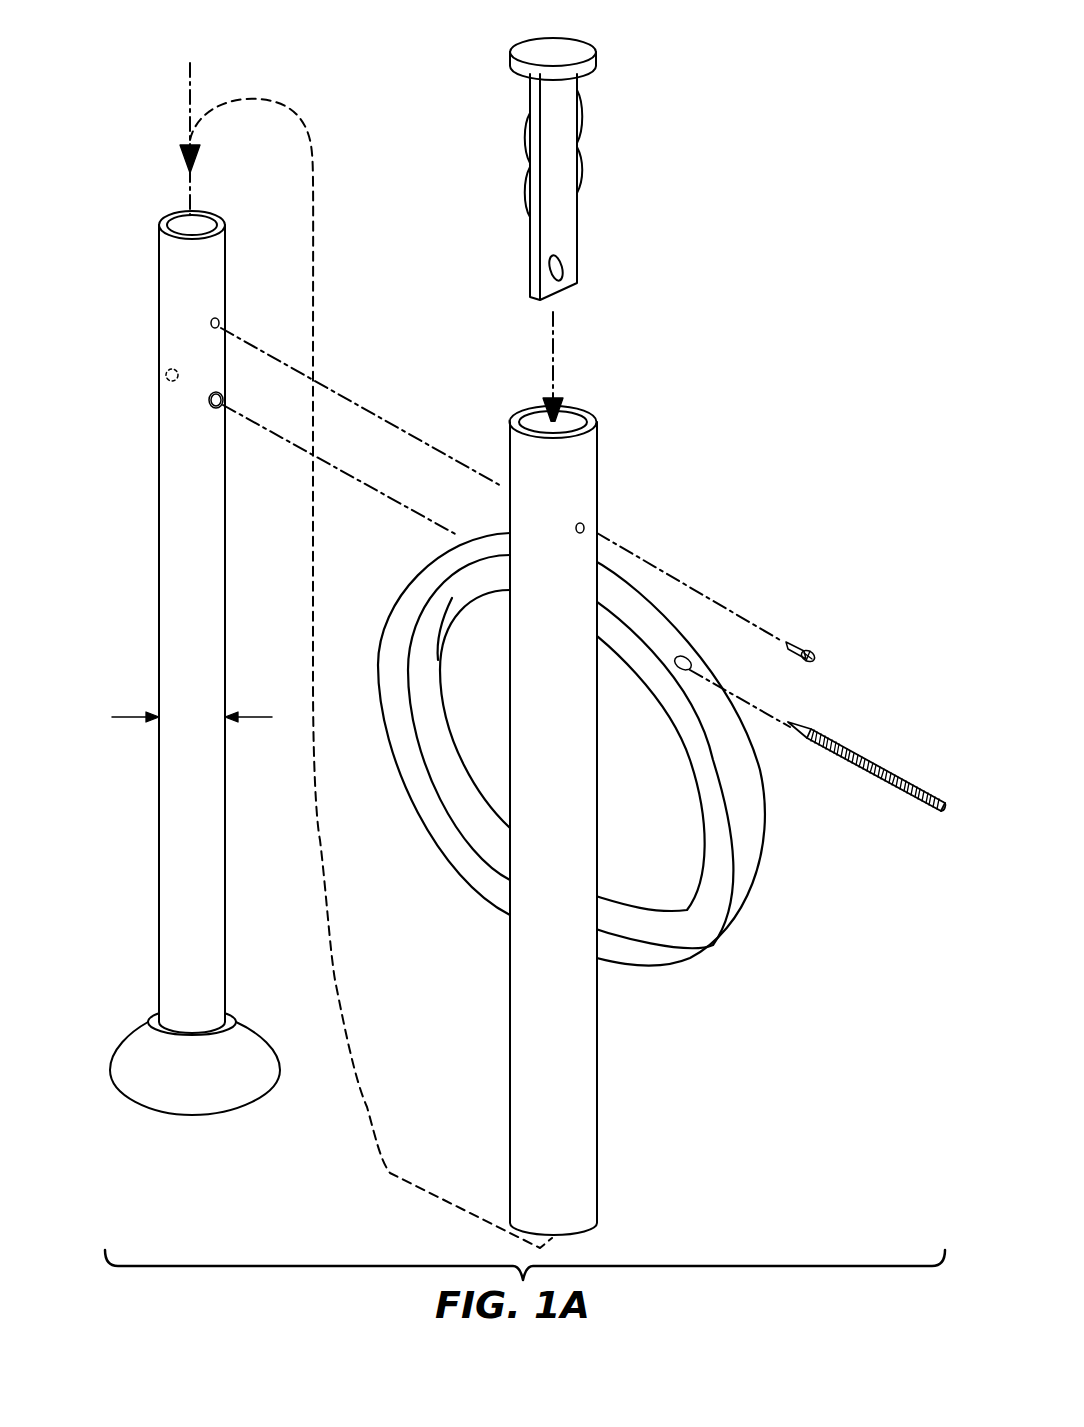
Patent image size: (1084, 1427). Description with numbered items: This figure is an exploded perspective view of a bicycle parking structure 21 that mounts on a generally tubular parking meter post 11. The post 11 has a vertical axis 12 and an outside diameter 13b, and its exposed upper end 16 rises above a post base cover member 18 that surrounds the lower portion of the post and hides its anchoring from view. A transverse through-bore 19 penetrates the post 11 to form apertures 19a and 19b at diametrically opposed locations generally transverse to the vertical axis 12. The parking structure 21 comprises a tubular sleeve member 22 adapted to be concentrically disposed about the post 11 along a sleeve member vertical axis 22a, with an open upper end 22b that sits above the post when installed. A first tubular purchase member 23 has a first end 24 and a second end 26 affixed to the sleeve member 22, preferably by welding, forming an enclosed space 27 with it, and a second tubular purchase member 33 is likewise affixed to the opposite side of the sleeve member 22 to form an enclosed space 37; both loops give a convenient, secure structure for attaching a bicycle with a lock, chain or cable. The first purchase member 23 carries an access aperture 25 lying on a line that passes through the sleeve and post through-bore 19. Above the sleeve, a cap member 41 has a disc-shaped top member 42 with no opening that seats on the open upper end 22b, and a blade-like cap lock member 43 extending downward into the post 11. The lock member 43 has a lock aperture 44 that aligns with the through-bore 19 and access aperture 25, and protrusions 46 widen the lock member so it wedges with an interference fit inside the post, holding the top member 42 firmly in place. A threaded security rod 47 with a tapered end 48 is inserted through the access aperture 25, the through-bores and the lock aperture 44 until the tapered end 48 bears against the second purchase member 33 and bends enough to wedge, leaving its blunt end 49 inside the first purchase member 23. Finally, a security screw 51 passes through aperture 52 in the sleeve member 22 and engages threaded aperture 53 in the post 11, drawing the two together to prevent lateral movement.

The parking meter post 11 is at (301, 589).
The vertical axis 12 is at (198, 112).
The outside diameter 13b is at (192, 705).
The exposed upper end 16 is at (203, 215).
The post base cover member 18 is at (240, 1030).
The post through-bore 19 is at (220, 398).
The aperture 19a is at (212, 405).
The aperture 19b is at (168, 370).
The bicycle parking structure 21 is at (596, 773).
The tubular sleeve member 22 is at (577, 803).
The sleeve member vertical axis 22a is at (556, 360).
The open upper end 22b is at (572, 415).
The first tubular purchase member 23 is at (686, 746).
The first end 24 is at (585, 565).
The access aperture 25 is at (688, 656).
The second end 26 is at (578, 905).
The enclosed space 27 is at (645, 763).
The second tubular purchase member 33 is at (438, 825).
The enclosed space 37 is at (474, 709).
The cap member 41 is at (544, 169).
The disc-shaped top member 42 is at (585, 42).
The cap lock member 43 is at (568, 232).
The lock aperture 44 is at (565, 268).
The protrusions 46 is at (522, 120).
The security rod 47 is at (872, 752).
The tapered end 48 is at (800, 718).
The blunt end 49 is at (950, 803).
The security screw 51 is at (808, 645).
The aperture 52 is at (656, 478).
The threaded aperture 53 is at (218, 320).